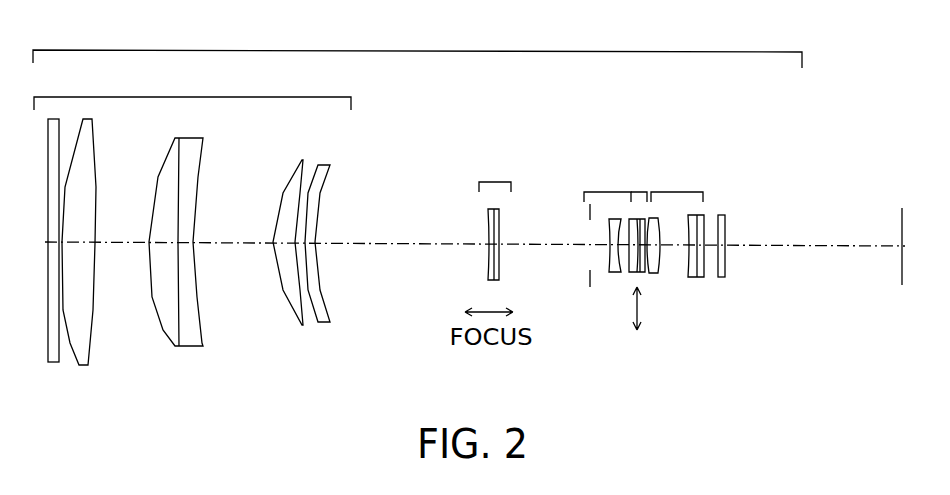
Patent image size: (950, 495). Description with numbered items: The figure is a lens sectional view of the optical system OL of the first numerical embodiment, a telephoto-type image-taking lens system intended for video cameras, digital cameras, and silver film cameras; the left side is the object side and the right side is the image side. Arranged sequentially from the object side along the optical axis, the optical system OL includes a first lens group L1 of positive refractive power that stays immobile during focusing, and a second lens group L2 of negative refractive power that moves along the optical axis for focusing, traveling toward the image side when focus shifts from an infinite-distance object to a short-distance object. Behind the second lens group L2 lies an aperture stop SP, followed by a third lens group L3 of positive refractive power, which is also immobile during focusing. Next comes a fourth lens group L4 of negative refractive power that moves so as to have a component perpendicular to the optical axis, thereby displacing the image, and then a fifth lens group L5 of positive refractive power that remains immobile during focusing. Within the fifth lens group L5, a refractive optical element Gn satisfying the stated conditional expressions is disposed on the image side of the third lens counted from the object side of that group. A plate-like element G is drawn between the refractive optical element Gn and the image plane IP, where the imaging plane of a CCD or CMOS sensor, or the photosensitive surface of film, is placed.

The optical system OL is at (417, 43).
The first lens group L1 is at (192, 215).
The second lens group L2 is at (495, 215).
The aperture stop SP is at (590, 215).
The third lens group L3 is at (607, 216).
The fourth lens group L4 is at (639, 216).
The fifth lens group L5 is at (675, 216).
The refractive optical element Gn is at (700, 214).
The glass block / filter G is at (725, 215).
The image plane IP is at (902, 220).